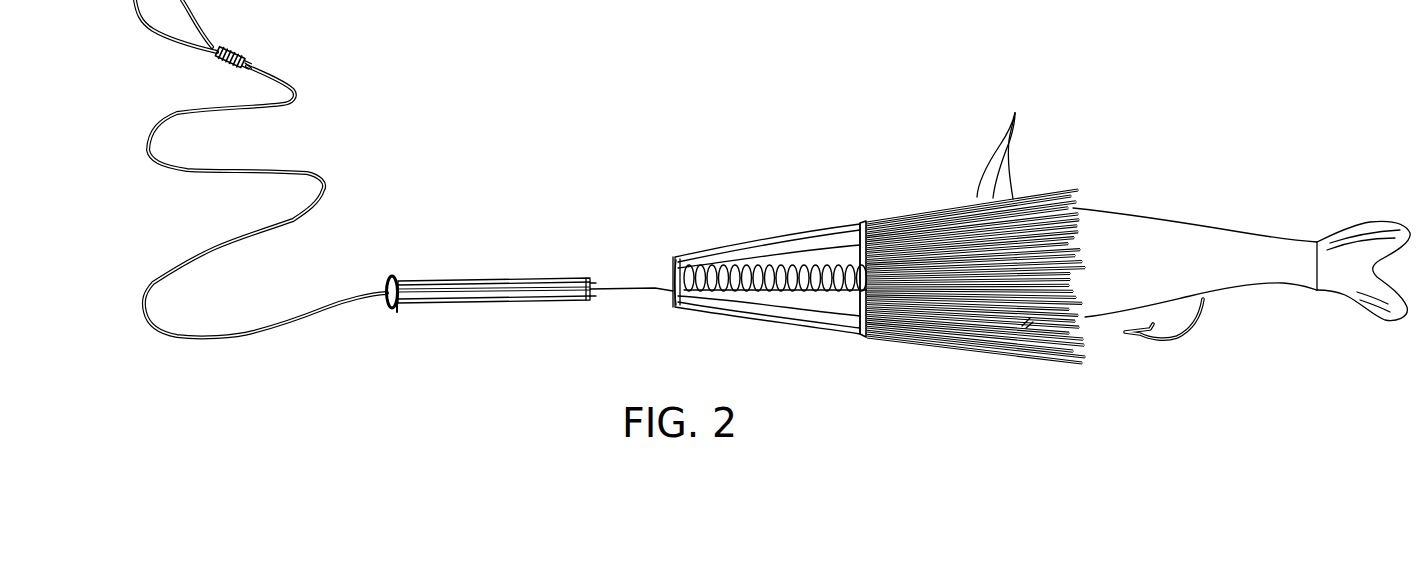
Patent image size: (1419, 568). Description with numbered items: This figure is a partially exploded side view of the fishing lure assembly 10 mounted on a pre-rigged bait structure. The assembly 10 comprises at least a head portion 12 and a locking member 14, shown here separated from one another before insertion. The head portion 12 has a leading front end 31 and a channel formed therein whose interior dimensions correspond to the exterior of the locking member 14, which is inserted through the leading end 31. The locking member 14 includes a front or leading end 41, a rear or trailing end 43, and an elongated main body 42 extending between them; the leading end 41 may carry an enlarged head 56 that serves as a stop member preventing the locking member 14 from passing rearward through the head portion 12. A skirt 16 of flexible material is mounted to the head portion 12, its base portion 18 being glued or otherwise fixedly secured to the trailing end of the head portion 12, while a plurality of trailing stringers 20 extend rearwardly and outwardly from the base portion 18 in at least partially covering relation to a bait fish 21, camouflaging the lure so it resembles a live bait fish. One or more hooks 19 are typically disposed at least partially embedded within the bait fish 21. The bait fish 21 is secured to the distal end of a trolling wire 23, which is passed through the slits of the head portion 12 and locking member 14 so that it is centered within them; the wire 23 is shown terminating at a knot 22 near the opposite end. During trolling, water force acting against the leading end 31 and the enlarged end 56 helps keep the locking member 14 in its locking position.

The fishing lure assembly 10 is at (824, 176).
The head portion 12 is at (731, 253).
The locking member 14 is at (461, 245).
The skirt 16 is at (902, 360).
The base portion 18 is at (863, 339).
The hooks 19 is at (1187, 323).
The trailing stringers 20 is at (1001, 144).
The bait fish 21 is at (1147, 188).
The knot 22 is at (192, 5).
The trolling wire 23 is at (293, 82).
The leading front end 31 is at (669, 303).
The leading end 41 is at (381, 280).
The main body 42 is at (483, 303).
The trailing end 43 is at (599, 275).
The enlarged head 56 is at (397, 310).